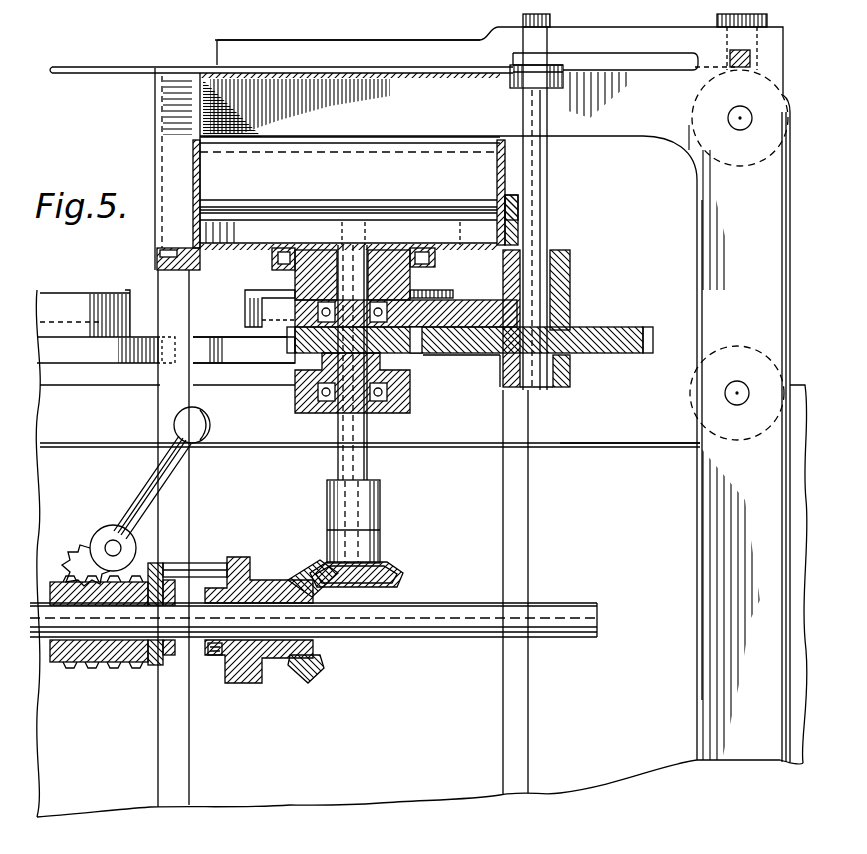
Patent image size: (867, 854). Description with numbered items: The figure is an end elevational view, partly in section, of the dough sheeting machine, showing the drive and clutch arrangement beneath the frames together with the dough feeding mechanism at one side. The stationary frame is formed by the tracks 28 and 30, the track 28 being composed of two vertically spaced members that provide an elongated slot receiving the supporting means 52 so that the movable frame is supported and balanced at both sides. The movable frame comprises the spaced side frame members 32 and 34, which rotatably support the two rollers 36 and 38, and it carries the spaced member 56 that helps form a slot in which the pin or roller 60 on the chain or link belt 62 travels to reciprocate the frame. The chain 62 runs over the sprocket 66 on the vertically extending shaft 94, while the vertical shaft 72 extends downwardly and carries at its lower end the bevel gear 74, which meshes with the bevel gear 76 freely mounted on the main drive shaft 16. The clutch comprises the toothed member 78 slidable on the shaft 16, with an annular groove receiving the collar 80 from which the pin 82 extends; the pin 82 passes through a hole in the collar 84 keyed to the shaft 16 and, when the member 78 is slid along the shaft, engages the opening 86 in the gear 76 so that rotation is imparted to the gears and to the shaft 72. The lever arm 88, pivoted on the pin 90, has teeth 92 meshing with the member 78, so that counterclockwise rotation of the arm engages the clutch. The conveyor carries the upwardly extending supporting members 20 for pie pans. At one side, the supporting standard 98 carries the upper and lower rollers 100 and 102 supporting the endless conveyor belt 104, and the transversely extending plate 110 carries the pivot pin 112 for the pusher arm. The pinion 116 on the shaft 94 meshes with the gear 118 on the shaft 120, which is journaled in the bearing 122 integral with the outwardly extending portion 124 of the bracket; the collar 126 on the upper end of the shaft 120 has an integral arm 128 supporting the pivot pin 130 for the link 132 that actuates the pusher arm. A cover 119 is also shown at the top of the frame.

The main drive shaft 16 is at (435, 638).
The supporting member 20 is at (250, 320).
The track 28 is at (505, 200).
The track 30 is at (172, 270).
The side frame member 32 is at (497, 170).
The side frame member 34 is at (200, 180).
The roller 36 is at (205, 118).
The roller 38 is at (210, 164).
The supporting means 52 is at (155, 144).
The spaced member 56 is at (393, 220).
The pin or roller 60 is at (342, 232).
The chain or link belt 62 is at (272, 262).
The sprocket 66 is at (410, 275).
The vertical shaft 72 is at (368, 462).
The bevel gear 74 is at (397, 570).
The bevel gear 76 is at (283, 660).
The toothed member 78 is at (130, 668).
The collar 80 is at (158, 563).
The pin 82 is at (205, 563).
The collar 84 is at (227, 683).
The opening 86 is at (262, 580).
The lever arm 88 is at (146, 488).
The pin 90 is at (100, 535).
The teeth 92 is at (76, 556).
The vertically extending shaft 94 is at (325, 405).
The supporting standard 98 is at (697, 258).
The upper roller 100 is at (700, 110).
The lower roller 102 is at (697, 398).
The endless conveyor belt 104 is at (600, 447).
The transversely extending plate 110 is at (780, 55).
The pivot pin 112 is at (730, 55).
The pinion 116 is at (295, 364).
The gear 118 is at (468, 355).
The cover 119 is at (420, 40).
The shaft 120 is at (560, 232).
The bearing 122 is at (570, 288).
The outwardly extending portion 124 is at (463, 310).
The collar 126 is at (515, 83).
The arm 128 is at (572, 58).
The pivot pin 130 is at (558, 40).
The link 132 is at (552, 22).